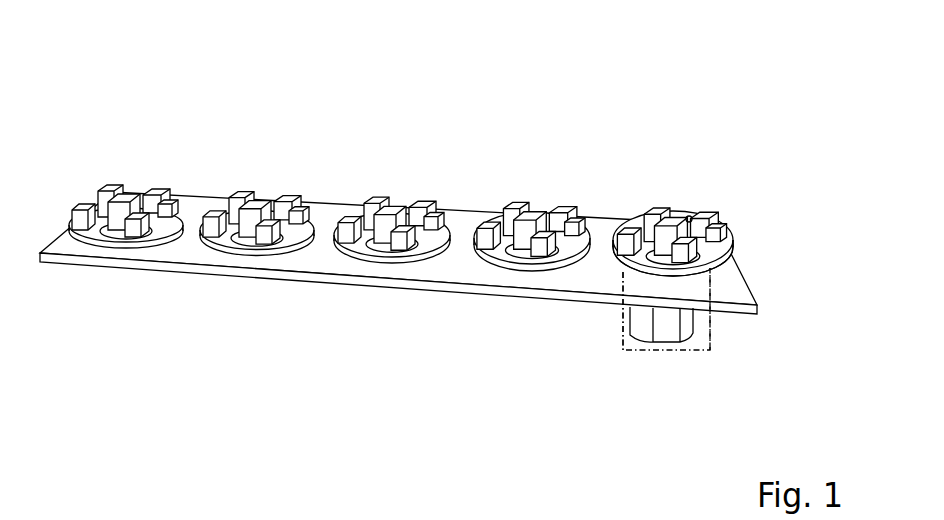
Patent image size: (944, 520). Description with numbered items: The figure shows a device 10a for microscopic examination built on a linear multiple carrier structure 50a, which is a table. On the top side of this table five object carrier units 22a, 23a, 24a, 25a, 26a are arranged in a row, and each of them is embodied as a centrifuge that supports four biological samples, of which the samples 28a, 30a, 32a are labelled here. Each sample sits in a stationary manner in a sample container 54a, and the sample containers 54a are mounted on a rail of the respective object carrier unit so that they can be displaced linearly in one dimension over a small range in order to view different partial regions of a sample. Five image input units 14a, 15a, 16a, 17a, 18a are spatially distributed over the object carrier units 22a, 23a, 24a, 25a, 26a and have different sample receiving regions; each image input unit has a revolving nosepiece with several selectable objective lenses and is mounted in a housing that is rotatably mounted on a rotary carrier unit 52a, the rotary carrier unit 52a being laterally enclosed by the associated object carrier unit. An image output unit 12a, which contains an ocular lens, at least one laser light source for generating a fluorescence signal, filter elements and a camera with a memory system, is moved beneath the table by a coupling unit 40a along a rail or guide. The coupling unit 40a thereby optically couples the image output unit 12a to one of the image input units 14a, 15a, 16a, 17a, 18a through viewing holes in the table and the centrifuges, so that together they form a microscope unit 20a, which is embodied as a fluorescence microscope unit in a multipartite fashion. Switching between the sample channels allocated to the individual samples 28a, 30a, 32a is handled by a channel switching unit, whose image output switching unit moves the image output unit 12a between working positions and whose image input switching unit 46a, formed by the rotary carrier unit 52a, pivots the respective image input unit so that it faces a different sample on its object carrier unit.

The device for microscopic examination 10a is at (200, 101).
The image output unit 12a is at (656, 310).
The image input unit 14a is at (690, 218).
The image input unit 15a is at (540, 213).
The image input unit 16a is at (404, 208).
The image input unit 17a is at (270, 200).
The image input unit 18a is at (138, 185).
The microscope unit 20a is at (677, 330).
The object carrier unit 22a is at (738, 238).
The object carrier unit 23a is at (583, 220).
The object carrier unit 24a is at (437, 216).
The object carrier unit 25a is at (306, 208).
The object carrier unit 26a is at (178, 195).
The sample 28a is at (733, 233).
The sample 30a is at (722, 266).
The sample 32a is at (630, 262).
The coupling unit 40a is at (701, 320).
The image input switching unit 46a is at (701, 210).
The multiple carrier structure 50a is at (331, 258).
The rotary carrier unit 52a is at (102, 247).
The sample container 54a is at (708, 223).